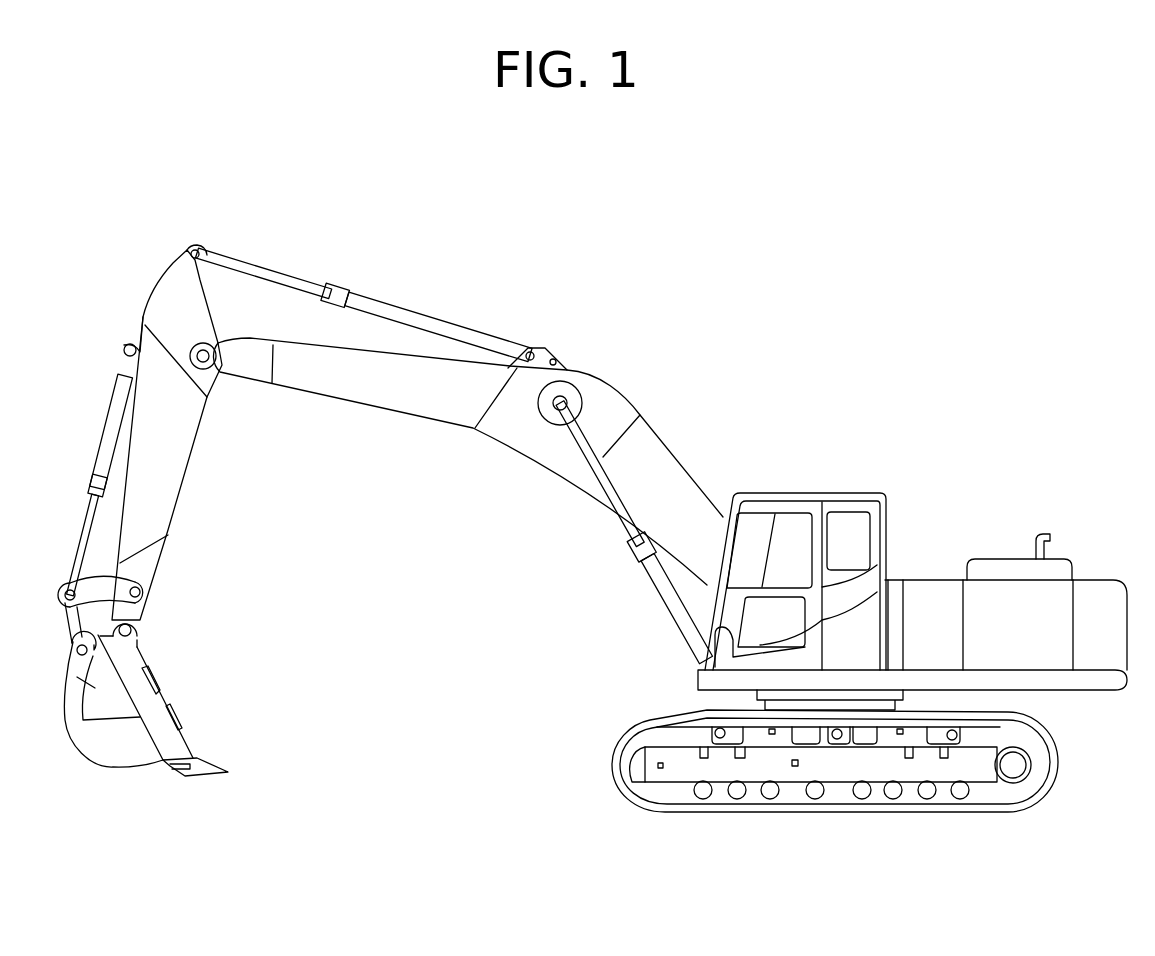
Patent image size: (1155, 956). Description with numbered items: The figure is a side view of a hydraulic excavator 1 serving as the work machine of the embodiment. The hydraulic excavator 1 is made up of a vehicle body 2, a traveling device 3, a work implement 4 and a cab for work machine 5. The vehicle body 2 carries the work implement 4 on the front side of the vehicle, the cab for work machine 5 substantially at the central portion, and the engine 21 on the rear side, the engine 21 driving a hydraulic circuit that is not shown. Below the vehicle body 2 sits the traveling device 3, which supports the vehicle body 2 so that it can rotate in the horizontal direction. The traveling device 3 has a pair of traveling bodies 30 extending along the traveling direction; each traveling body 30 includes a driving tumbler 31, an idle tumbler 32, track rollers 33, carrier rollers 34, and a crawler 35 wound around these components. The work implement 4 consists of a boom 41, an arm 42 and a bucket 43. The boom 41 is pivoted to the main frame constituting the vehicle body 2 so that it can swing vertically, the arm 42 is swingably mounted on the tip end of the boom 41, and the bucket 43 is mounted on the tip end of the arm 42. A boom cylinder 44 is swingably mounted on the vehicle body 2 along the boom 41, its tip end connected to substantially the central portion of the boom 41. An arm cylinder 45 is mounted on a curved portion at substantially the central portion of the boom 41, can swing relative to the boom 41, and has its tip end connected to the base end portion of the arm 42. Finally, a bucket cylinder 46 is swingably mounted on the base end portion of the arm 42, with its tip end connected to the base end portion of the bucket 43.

The hydraulic excavator 1 is at (832, 340).
The vehicle body 2 is at (928, 603).
The engine 21 is at (1008, 570).
The cab for work machine 5 is at (788, 490).
The traveling device 3 is at (842, 775).
The traveling body 30 is at (758, 775).
The driving tumbler 31 is at (1013, 778).
The idle tumbler 32 is at (637, 778).
The track rollers 33 is at (960, 800).
The carrier rollers 34 is at (718, 732).
The crawler 35 is at (1058, 788).
The work implement 4 is at (404, 578).
The boom 41 is at (653, 447).
The arm 42 is at (170, 478).
The bucket 43 is at (115, 753).
The boom cylinder 44 is at (673, 583).
The arm cylinder 45 is at (413, 315).
The bucket cylinder 46 is at (110, 427).